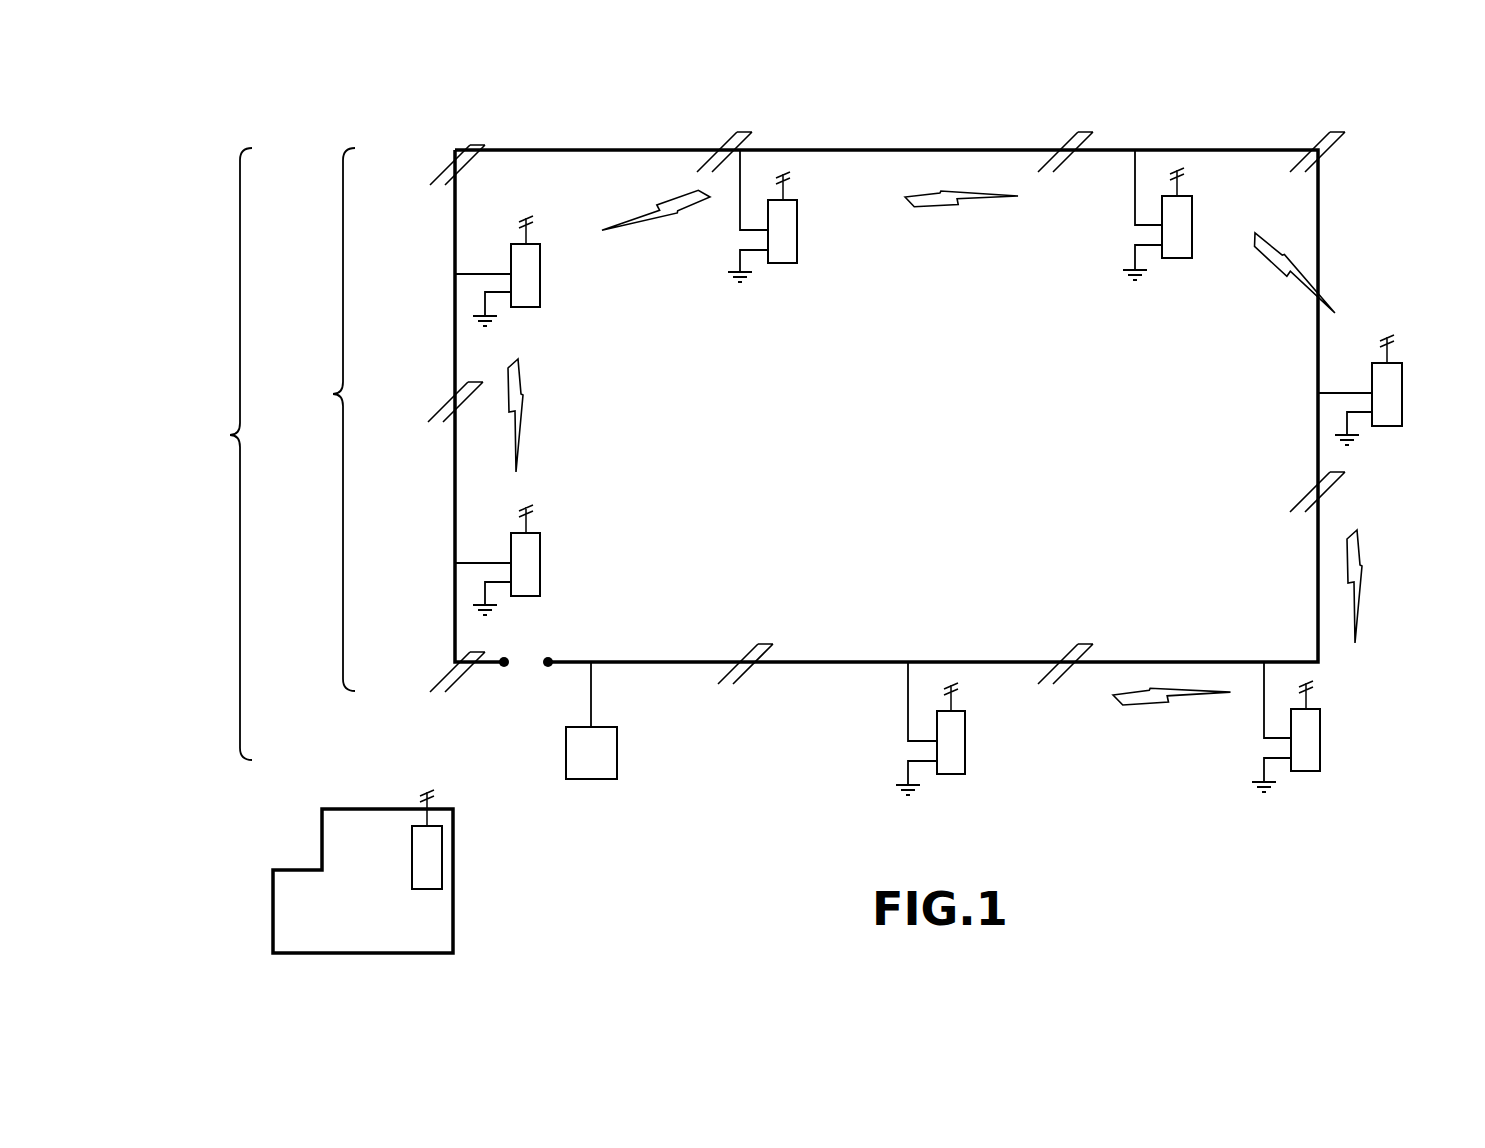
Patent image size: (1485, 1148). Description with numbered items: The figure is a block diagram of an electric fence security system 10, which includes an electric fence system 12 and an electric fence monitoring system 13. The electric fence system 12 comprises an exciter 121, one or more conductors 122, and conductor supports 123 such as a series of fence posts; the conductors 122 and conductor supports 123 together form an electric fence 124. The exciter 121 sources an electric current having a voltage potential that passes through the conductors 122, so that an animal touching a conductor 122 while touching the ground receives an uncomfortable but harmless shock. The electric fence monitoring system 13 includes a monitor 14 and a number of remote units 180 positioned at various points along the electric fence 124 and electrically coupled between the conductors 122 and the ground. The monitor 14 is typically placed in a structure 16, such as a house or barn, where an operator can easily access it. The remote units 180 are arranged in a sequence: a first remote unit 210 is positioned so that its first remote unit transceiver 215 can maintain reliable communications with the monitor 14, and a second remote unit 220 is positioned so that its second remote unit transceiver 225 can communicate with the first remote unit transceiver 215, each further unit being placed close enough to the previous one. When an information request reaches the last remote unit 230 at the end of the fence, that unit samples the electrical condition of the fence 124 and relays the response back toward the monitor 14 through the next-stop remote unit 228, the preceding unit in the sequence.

The electric fence security system 10 is at (1405, 141).
The electric fence system 12 is at (221, 454).
The electric fence monitoring system 13 is at (540, 250).
The monitor 14 is at (442, 846).
The structure 16 is at (453, 942).
The exciter 121 is at (602, 724).
The conductors 122 is at (798, 664).
The conductor supports 123 is at (480, 147).
The electric fence 124 is at (318, 419).
The remote units 180 is at (540, 273).
The first remote unit 210 is at (965, 740).
The first remote unit transceiver 215 is at (957, 700).
The second remote unit 220 is at (1302, 772).
The second remote unit transceiver 225 is at (1310, 702).
The next-stop remote unit 228 is at (540, 300).
The last remote unit 230 is at (540, 538).